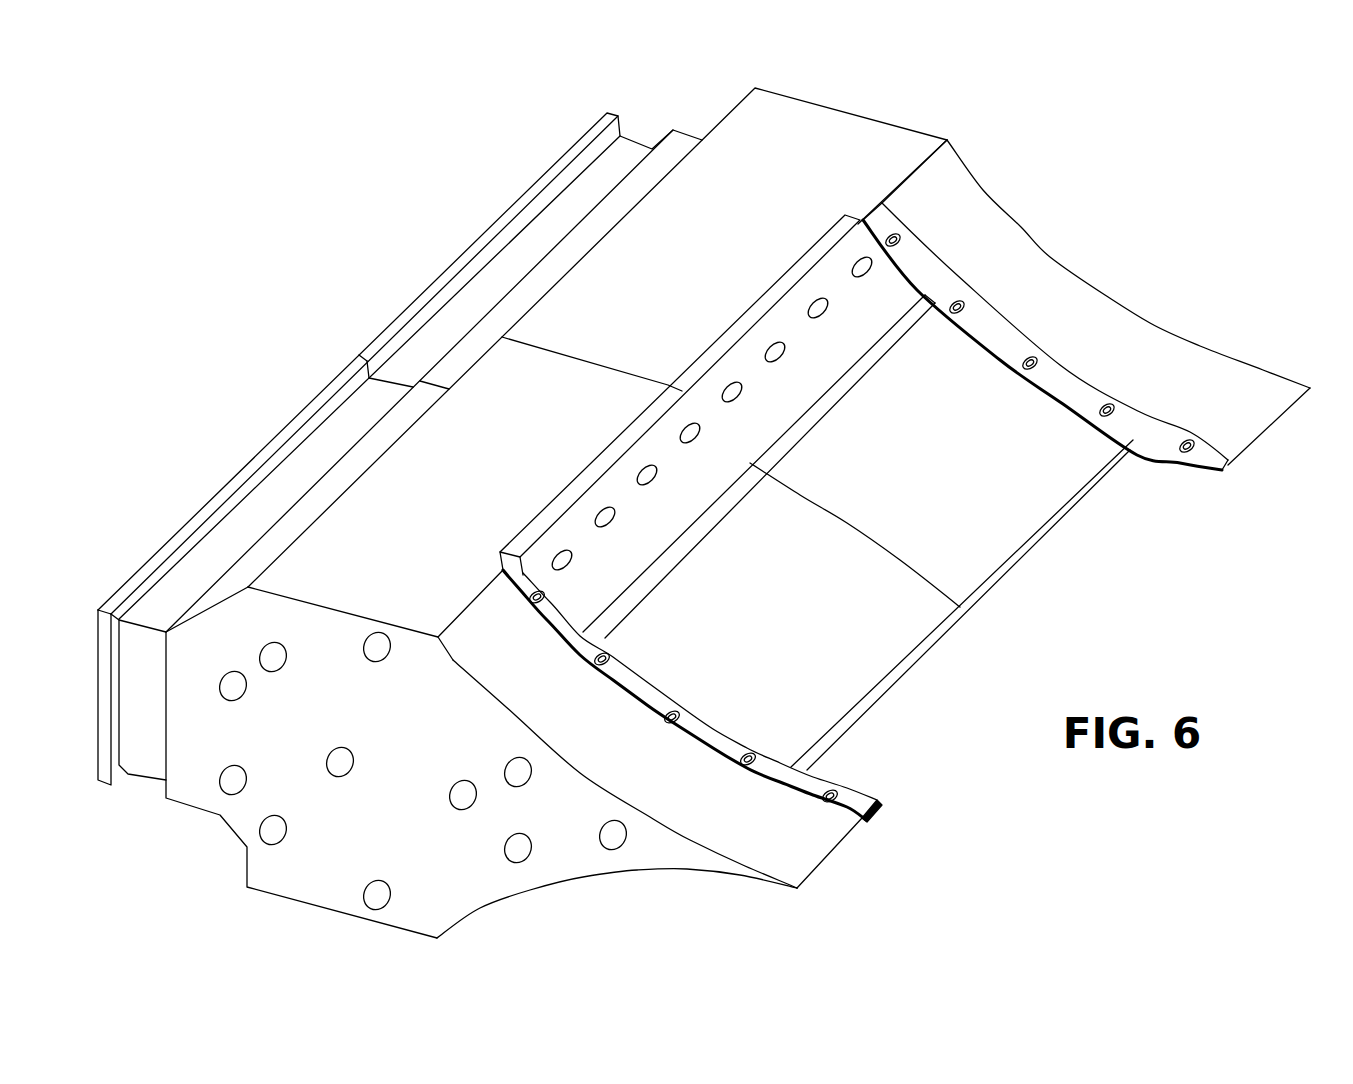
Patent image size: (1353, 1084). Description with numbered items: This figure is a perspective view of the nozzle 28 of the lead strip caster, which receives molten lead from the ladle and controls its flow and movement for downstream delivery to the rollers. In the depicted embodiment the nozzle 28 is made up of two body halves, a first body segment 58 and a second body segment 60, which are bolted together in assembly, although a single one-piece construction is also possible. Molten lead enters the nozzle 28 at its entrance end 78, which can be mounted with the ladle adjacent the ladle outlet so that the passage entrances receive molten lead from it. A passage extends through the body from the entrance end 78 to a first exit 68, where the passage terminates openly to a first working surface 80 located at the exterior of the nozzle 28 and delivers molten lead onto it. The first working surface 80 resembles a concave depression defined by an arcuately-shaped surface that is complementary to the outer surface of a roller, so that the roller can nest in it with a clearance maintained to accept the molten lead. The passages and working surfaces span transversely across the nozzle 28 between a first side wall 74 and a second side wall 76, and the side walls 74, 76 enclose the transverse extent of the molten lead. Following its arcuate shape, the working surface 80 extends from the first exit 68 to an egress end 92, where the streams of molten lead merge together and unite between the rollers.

The nozzle 28 is at (1017, 152).
The first body segment 58 is at (252, 453).
The second body segment 60 is at (498, 215).
The first exit 68 is at (693, 533).
The first side wall 74 is at (703, 721).
The second side wall 76 is at (1063, 398).
The entrance end 78 is at (372, 340).
The first working surface 80 is at (853, 665).
The egress end 92 is at (1007, 568).